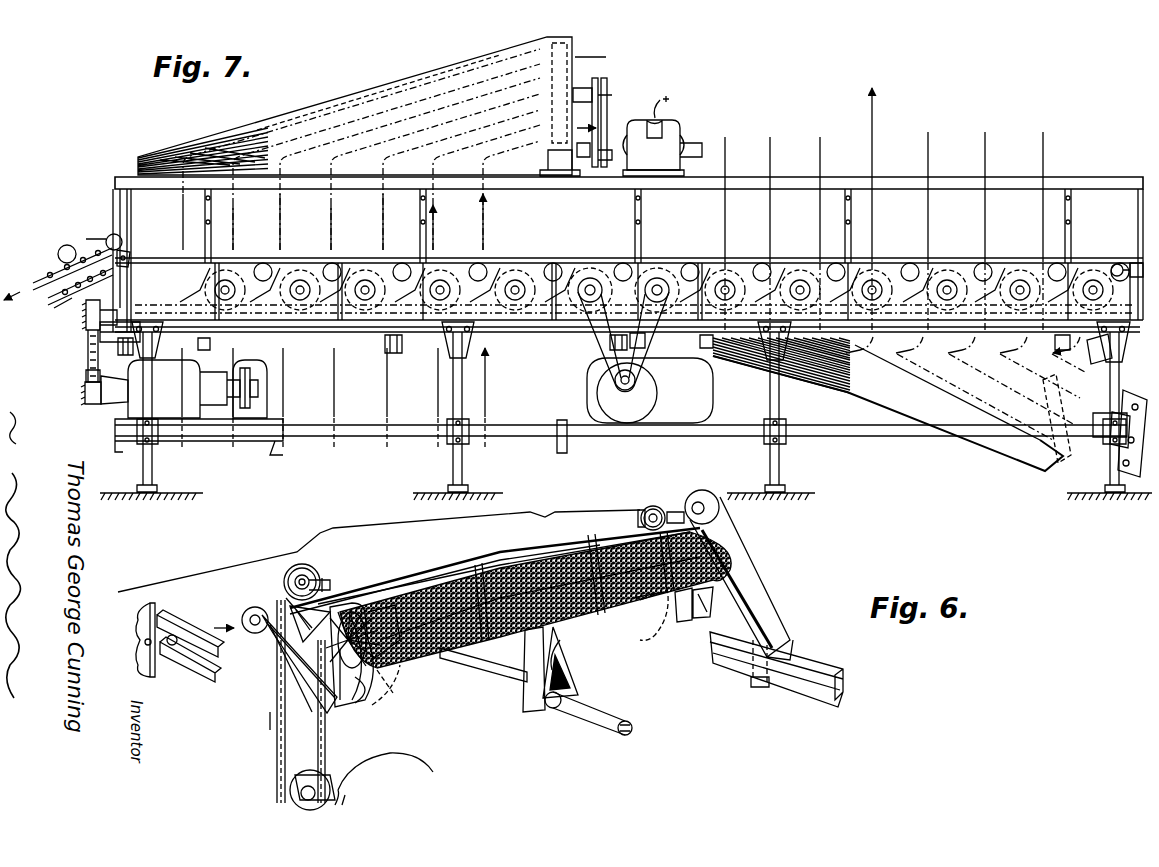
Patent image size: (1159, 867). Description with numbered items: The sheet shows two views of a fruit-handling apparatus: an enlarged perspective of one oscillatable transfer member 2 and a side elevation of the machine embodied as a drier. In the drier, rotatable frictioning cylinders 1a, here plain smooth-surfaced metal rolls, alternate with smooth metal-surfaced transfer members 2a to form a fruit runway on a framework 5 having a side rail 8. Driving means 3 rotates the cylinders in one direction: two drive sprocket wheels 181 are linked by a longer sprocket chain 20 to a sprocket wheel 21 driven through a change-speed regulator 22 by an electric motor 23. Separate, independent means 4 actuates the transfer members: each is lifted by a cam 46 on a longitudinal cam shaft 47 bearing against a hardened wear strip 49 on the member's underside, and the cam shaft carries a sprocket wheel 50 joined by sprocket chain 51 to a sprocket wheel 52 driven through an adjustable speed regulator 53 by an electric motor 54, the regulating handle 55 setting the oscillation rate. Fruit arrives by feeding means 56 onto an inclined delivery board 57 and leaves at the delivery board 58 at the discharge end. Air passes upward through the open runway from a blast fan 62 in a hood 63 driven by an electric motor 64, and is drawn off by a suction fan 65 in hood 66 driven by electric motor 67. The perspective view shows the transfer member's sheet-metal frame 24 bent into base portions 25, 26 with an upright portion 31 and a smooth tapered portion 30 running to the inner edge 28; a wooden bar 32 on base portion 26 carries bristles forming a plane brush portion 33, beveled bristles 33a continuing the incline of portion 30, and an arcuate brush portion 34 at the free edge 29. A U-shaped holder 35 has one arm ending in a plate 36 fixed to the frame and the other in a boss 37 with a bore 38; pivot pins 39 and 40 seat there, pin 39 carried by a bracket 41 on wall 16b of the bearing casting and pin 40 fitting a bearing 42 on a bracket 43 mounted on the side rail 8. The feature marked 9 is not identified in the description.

In FIG. 7, the rotatable member 1a is at (234, 278).
In FIG. 7, the transfer member 2a is at (270, 278).
In FIG. 6, the transfer member 2 is at (557, 539).
In FIG. 7, the driving means for brush rolls 3 is at (648, 342).
In FIG. 7, the actuating means for transfer members 4 is at (85, 378).
In FIG. 6, the actuating means for transfer members 4 is at (270, 720).
In FIG. 7, the framework 5 is at (782, 452).
In FIG. 6, the side rail 8 is at (806, 658).
In FIG. 6, the strap band 9 is at (594, 550).
In FIG. 6, the wall of bearing block 16b is at (138, 652).
In FIG. 7, the sprocket chain 20 is at (599, 357).
In FIG. 7, the sprocket wheel 21 is at (636, 380).
In FIG. 6, the sprocket wheel 21 is at (299, 619).
In FIG. 7, the change-speed mechanism 22 is at (643, 393).
In FIG. 7, the electric motor 23 is at (714, 390).
In FIG. 6, the frame 24 is at (340, 695).
In FIG. 6, the base portion 25 is at (286, 664).
In FIG. 6, the base portion 26 is at (368, 691).
In FIG. 6, the edge 28 is at (290, 590).
In FIG. 6, the edge 29 is at (412, 663).
In FIG. 6, the tapered portion 30 is at (365, 592).
In FIG. 6, the upright portion 31 is at (322, 604).
In FIG. 6, the wooden bar 32 is at (356, 661).
In FIG. 6, the plane brush portion 33 is at (465, 592).
In FIG. 6, the beveled bristles 33a is at (395, 603).
In FIG. 6, the arcuate brush portion 34 is at (646, 608).
In FIG. 6, the supporting bracket 35 is at (307, 687).
In FIG. 6, the plate 36 is at (520, 652).
In FIG. 6, the boss 37 is at (655, 485).
In FIG. 6, the bore 38 is at (243, 626).
In FIG. 6, the pivot pin 39 is at (205, 627).
In FIG. 6, the pivot pin 40 is at (680, 510).
In FIG. 6, the bracket 41 is at (180, 658).
In FIG. 6, the bearing 42 is at (707, 490).
In FIG. 6, the bracket 43 is at (742, 583).
In FIG. 6, the cam 46 is at (570, 682).
In FIG. 7, the cam shaft 47 is at (84, 325).
In FIG. 6, the cam shaft 47 is at (595, 716).
In FIG. 6, the wear strip 49 is at (592, 656).
In FIG. 7, the sprocket wheel 50 is at (84, 312).
In FIG. 6, the sprocket wheel 50 is at (284, 575).
In FIG. 7, the sprocket chain 51 is at (87, 355).
In FIG. 6, the sprocket chain 51 is at (278, 747).
In FIG. 7, the sprocket wheel 52 is at (84, 398).
In FIG. 6, the sprocket wheel 52 is at (290, 790).
In FIG. 7, the change-speed regulator 53 is at (134, 400).
In FIG. 7, the electric motor 54 is at (268, 380).
In FIG. 6, the electric motor 54 is at (386, 758).
In FIG. 7, the regulating handle 55 is at (268, 405).
In FIG. 7, the feeding means 56 is at (78, 250).
In FIG. 7, the delivery board 57 is at (130, 258).
In FIG. 7, the delivery board 58 is at (1125, 285).
In FIG. 7, the blast fan 62 is at (1052, 466).
In FIG. 7, the hood 63 is at (940, 432).
In FIG. 7, the electric motor 64 is at (1098, 462).
In FIG. 7, the suction fan 65 is at (592, 115).
In FIG. 7, the hood 66 is at (370, 90).
In FIG. 7, the electric motor 67 is at (667, 112).
In FIG. 7, the drive sprocket wheel 181 is at (652, 283).